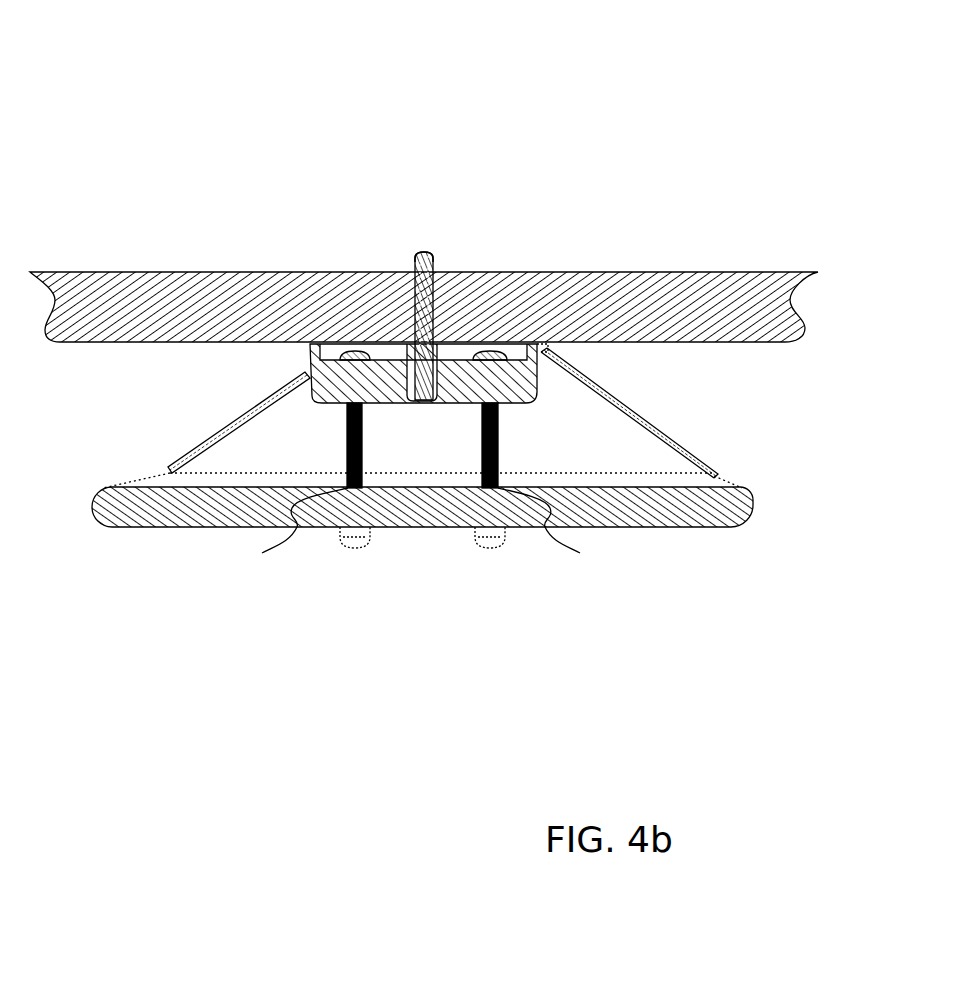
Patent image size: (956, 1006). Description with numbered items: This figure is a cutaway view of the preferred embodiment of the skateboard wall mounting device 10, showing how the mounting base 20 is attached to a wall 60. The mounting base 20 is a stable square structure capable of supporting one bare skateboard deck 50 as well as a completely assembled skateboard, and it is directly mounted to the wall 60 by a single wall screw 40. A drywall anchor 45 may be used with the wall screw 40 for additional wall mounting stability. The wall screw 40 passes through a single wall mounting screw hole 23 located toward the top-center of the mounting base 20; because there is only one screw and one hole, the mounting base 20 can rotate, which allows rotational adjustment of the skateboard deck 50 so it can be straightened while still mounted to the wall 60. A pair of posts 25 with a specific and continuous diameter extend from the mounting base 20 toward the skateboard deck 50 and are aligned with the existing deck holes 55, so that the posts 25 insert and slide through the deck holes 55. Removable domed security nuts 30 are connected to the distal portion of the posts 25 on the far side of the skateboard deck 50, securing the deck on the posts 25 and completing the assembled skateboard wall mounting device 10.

The skateboard wall mounting device 10 is at (225, 96).
The wall 60 is at (315, 296).
The drywall anchor 45 is at (430, 253).
The wall screw 40 is at (437, 287).
The mounting base 20 is at (538, 392).
The wall mounting screw hole 23 is at (322, 396).
The posts 25 is at (332, 440).
The skateboard deck 50 is at (678, 505).
The deck holes 55 is at (420, 528).
The domed security nuts 30 is at (357, 550).